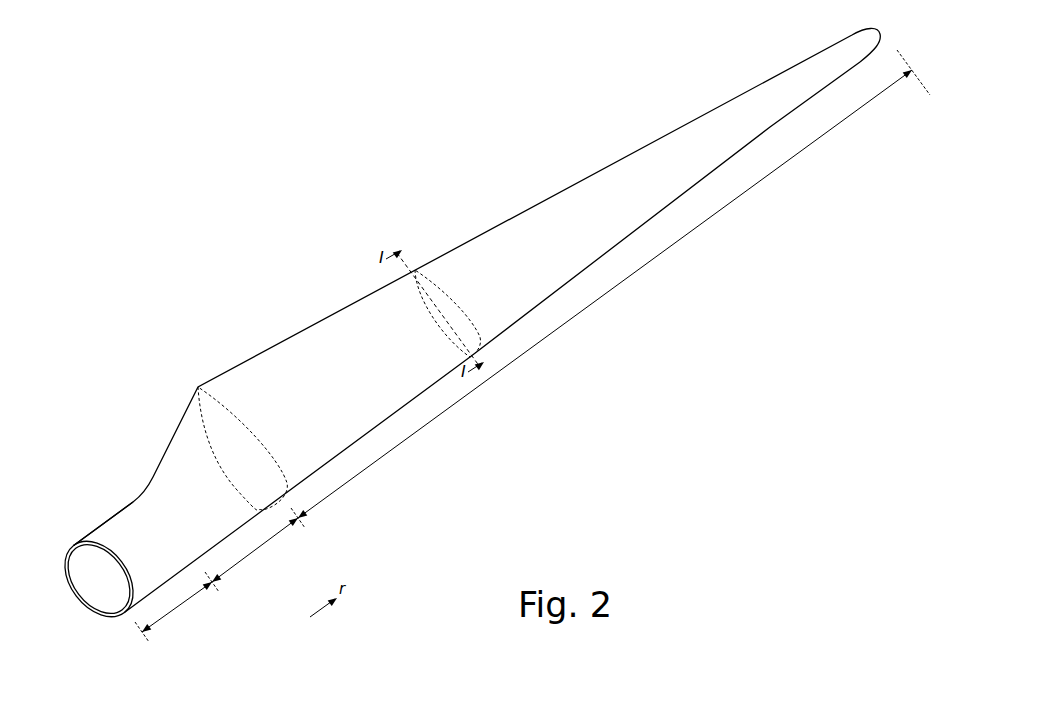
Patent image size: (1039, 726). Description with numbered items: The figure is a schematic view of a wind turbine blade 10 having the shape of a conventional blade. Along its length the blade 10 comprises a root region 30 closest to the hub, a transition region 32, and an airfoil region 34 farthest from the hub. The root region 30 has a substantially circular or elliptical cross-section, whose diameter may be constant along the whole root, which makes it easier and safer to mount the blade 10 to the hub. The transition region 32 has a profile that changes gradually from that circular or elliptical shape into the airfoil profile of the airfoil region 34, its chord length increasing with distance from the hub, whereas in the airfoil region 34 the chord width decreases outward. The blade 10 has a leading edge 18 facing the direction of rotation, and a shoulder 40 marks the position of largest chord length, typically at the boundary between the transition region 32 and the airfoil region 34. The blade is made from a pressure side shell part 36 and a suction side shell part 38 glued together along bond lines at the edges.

The wind turbine blade 10 is at (330, 213).
The leading edge 18 is at (633, 233).
The root region 30 is at (180, 603).
The transition region 32 is at (258, 550).
The airfoil region 34 is at (547, 335).
The pressure side shell part 36 is at (80, 538).
The suction side shell part 38 is at (72, 549).
The shoulder 40 is at (197, 390).